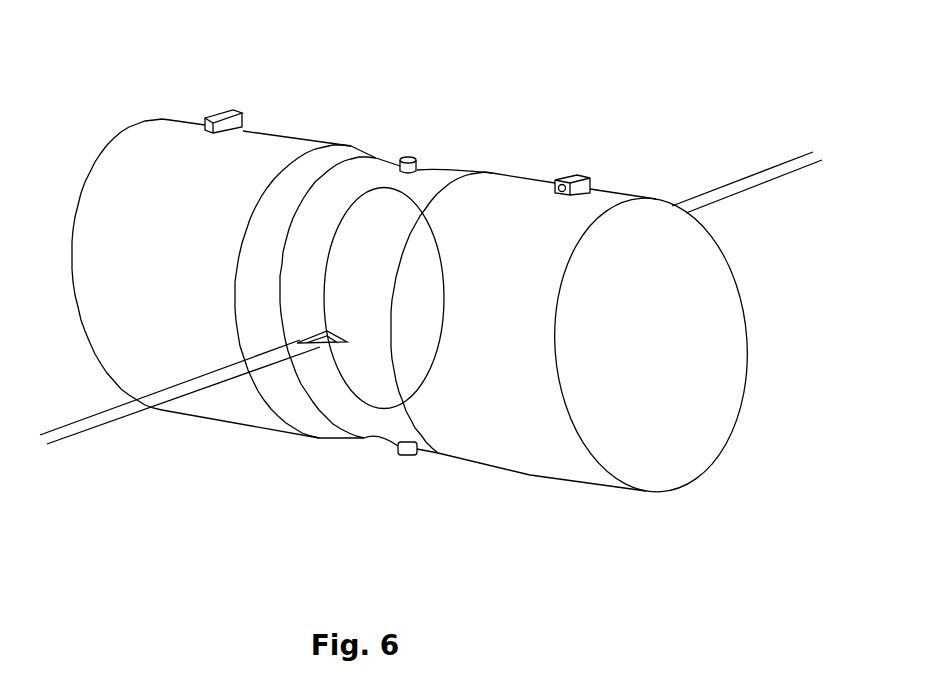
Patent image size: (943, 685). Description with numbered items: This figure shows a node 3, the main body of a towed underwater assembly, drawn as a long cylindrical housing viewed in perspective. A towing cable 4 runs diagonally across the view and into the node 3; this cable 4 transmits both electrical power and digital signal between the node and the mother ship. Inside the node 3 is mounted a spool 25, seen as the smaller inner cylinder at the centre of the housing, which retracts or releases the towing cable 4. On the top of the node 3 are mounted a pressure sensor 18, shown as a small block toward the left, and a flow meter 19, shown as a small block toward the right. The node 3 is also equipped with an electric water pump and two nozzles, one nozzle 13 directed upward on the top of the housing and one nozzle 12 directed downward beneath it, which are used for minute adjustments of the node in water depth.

The node 3 is at (170, 140).
The towing cable 4 is at (107, 428).
The nozzle 12 is at (410, 463).
The nozzle 13 is at (411, 152).
The pressure sensor 18 is at (224, 100).
The flow meter 19 is at (569, 172).
The spool 25 is at (355, 398).